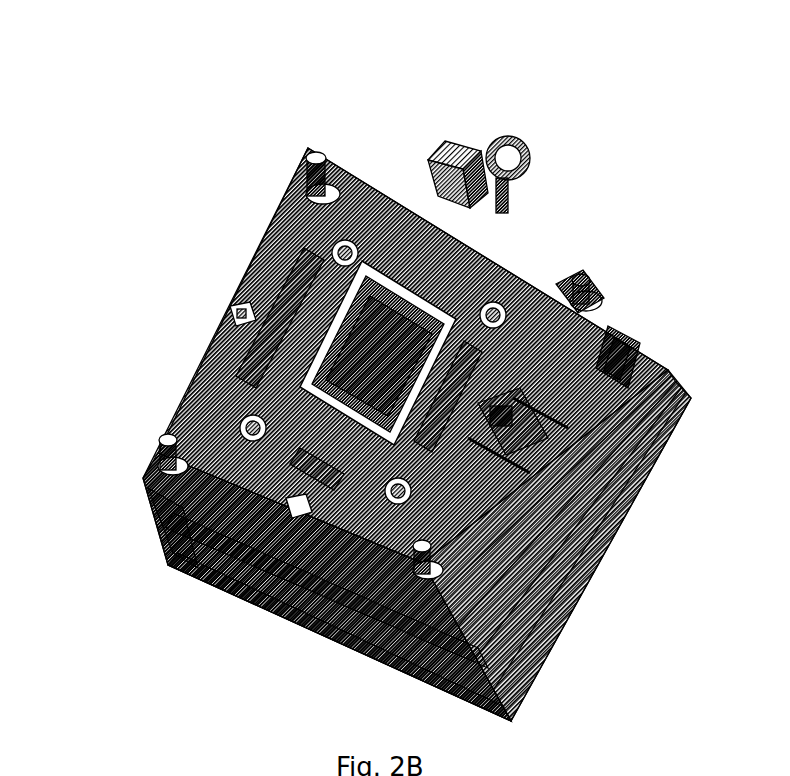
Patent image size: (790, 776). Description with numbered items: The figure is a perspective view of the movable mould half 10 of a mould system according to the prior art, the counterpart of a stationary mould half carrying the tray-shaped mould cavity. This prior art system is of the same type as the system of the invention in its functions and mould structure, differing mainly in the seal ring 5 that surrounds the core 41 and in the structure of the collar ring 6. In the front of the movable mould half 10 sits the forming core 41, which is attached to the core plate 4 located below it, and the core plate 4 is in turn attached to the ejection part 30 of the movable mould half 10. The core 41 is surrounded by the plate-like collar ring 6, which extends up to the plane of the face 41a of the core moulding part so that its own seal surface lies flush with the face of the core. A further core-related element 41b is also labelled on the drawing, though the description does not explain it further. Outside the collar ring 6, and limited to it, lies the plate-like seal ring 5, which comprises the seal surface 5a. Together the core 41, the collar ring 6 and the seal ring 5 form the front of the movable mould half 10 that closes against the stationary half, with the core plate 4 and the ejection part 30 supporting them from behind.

The movable mould half 10 is at (183, 104).
The forming core 41 is at (330, 312).
The face of the core moulding part 41a is at (168, 532).
The eye bolt 41b is at (360, 262).
The collar ring 6 is at (425, 303).
The seal ring 5 is at (477, 503).
The seal surface 5a is at (442, 303).
The core plate 4 is at (607, 334).
The ejection part 30 is at (570, 443).